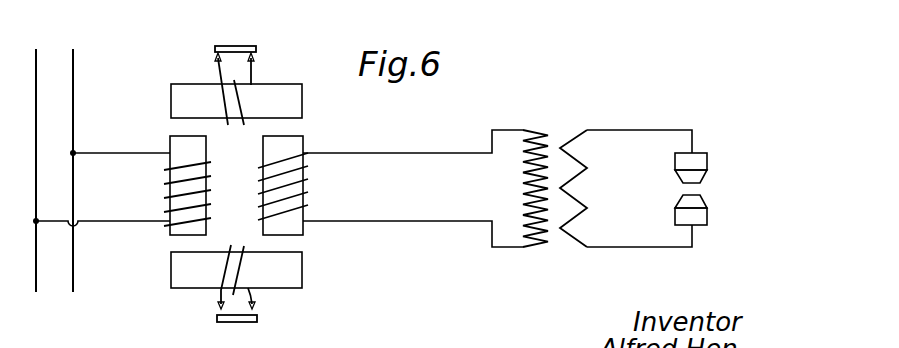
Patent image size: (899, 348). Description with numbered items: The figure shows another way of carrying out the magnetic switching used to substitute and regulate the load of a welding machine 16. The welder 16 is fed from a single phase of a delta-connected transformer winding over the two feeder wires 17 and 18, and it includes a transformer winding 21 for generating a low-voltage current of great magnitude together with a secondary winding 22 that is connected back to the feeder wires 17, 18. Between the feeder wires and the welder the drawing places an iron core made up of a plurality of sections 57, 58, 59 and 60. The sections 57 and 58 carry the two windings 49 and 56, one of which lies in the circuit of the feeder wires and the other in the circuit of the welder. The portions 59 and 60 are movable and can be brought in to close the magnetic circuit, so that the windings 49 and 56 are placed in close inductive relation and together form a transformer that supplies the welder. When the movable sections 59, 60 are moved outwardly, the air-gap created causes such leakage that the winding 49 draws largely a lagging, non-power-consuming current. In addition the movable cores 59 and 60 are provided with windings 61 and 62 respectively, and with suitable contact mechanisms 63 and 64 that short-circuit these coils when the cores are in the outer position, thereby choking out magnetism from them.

The welding machine 16 is at (714, 173).
The feeder wire 17 is at (36, 103).
The feeder wire 18 is at (74, 100).
The transformer winding 21 is at (592, 182).
The secondary winding 22 is at (524, 186).
The winding 49 is at (167, 185).
The winding 56 is at (306, 188).
The iron core section 57 is at (175, 144).
The iron core section 58 is at (303, 143).
The movable core section 59 is at (186, 90).
The movable core section 60 is at (171, 270).
The winding 61 is at (239, 97).
The winding 62 is at (236, 265).
The contact mechanism 63 is at (238, 42).
The contact mechanism 64 is at (242, 324).